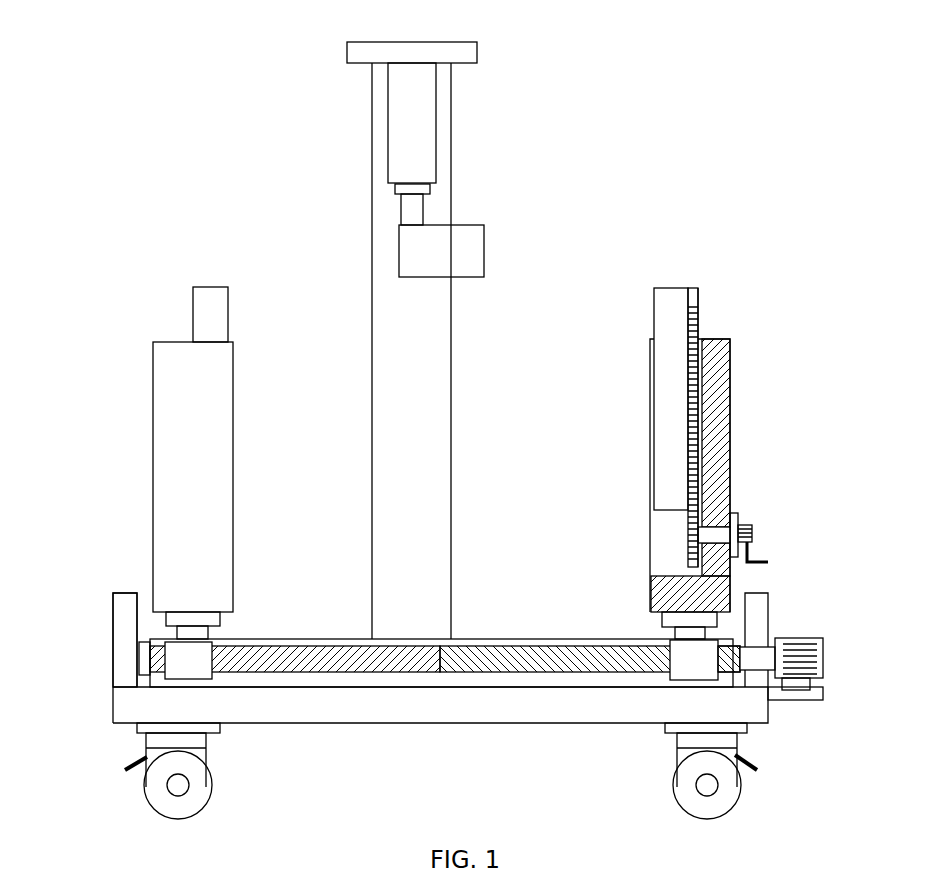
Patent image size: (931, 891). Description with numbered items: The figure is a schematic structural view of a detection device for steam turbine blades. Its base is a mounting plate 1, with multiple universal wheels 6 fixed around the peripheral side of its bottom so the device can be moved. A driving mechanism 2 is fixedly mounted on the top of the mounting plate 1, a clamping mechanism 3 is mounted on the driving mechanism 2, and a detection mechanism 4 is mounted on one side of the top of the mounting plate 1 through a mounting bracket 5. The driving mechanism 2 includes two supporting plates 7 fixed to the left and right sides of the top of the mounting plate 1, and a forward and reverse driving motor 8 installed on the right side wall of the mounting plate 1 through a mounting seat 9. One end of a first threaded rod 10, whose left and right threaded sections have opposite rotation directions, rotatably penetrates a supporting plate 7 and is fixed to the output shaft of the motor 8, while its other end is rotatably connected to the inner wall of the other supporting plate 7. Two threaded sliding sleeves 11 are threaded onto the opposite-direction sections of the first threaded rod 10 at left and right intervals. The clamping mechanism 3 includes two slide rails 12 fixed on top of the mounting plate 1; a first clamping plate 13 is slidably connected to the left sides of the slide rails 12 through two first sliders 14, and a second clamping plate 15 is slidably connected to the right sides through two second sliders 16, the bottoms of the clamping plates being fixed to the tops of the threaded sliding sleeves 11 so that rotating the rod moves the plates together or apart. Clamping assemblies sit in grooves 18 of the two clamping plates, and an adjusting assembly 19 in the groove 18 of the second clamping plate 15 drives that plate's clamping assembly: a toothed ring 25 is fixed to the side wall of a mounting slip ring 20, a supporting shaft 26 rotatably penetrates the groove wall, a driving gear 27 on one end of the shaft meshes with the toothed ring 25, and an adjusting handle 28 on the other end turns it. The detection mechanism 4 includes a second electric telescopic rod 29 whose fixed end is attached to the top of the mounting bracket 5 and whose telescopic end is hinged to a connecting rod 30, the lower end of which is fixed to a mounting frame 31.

The mounting plate 1 is at (410, 663).
The driving mechanism 2 is at (738, 673).
The clamping mechanism 3 is at (180, 449).
The detection mechanism 4 is at (394, 413).
The mounting bracket 5 is at (430, 587).
The universal wheels 6 is at (177, 750).
The supporting plates 7 is at (125, 665).
The forward and reverse driving motor 8 is at (793, 653).
The mounting seat 9 is at (810, 690).
The first threaded rod 10 is at (255, 670).
The threaded sliding sleeves 11 is at (192, 655).
The slide rails 12 is at (326, 680).
The first clamping plate 13 is at (180, 540).
The first sliders 14 is at (172, 620).
The second clamping plate 15 is at (728, 447).
The second sliders 16 is at (730, 602).
The groove 18 is at (700, 346).
The adjusting assembly 19 is at (722, 383).
The mounting slip ring 20 is at (670, 305).
The toothed ring 25 is at (694, 310).
The supporting shaft 26 is at (728, 510).
The driving gear 27 is at (702, 500).
The adjusting handle 28 is at (750, 533).
The second electric telescopic rod 29 is at (412, 162).
The connecting rod 30 is at (413, 217).
The mounting frame 31 is at (422, 267).